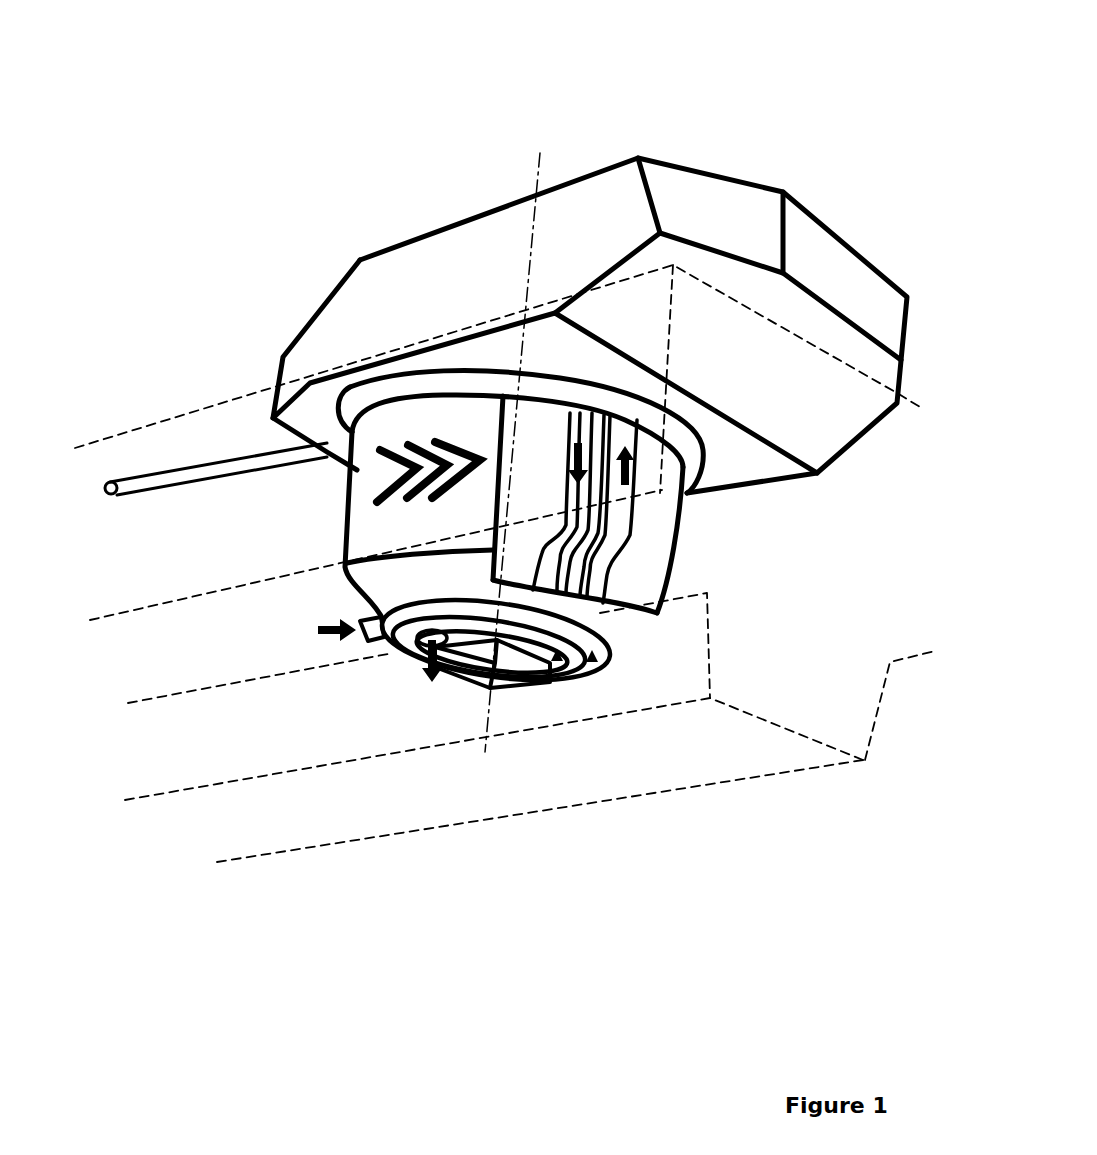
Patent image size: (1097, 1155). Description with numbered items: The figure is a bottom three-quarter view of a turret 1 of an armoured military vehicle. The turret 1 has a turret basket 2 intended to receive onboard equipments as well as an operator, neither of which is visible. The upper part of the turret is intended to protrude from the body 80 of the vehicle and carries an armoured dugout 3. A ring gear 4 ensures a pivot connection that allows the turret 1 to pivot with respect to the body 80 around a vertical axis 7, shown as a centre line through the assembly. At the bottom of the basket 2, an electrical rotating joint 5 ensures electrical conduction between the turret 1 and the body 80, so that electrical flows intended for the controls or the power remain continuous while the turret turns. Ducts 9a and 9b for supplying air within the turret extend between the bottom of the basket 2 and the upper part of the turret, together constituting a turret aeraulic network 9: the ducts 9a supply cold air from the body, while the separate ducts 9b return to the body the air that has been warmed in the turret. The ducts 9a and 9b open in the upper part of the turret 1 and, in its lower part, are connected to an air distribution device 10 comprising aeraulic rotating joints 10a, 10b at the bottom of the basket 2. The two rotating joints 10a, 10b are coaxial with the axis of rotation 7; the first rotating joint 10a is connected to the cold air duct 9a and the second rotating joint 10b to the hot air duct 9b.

The turret 1 is at (399, 80).
The turret basket 2 is at (390, 538).
The armoured dugout 3 is at (755, 197).
The ring gear 4 is at (347, 423).
The electrical rotating joint 5 is at (480, 673).
The vertical axis 7 is at (537, 182).
The turret aeraulic network 9 is at (690, 508).
The cold air duct 9a is at (580, 506).
The hot air duct 9b is at (625, 510).
The air distribution device 10 is at (570, 671).
The first aeraulic rotating joint 10a is at (557, 663).
The second aeraulic rotating joint 10b is at (592, 662).
The body 80 is at (540, 770).